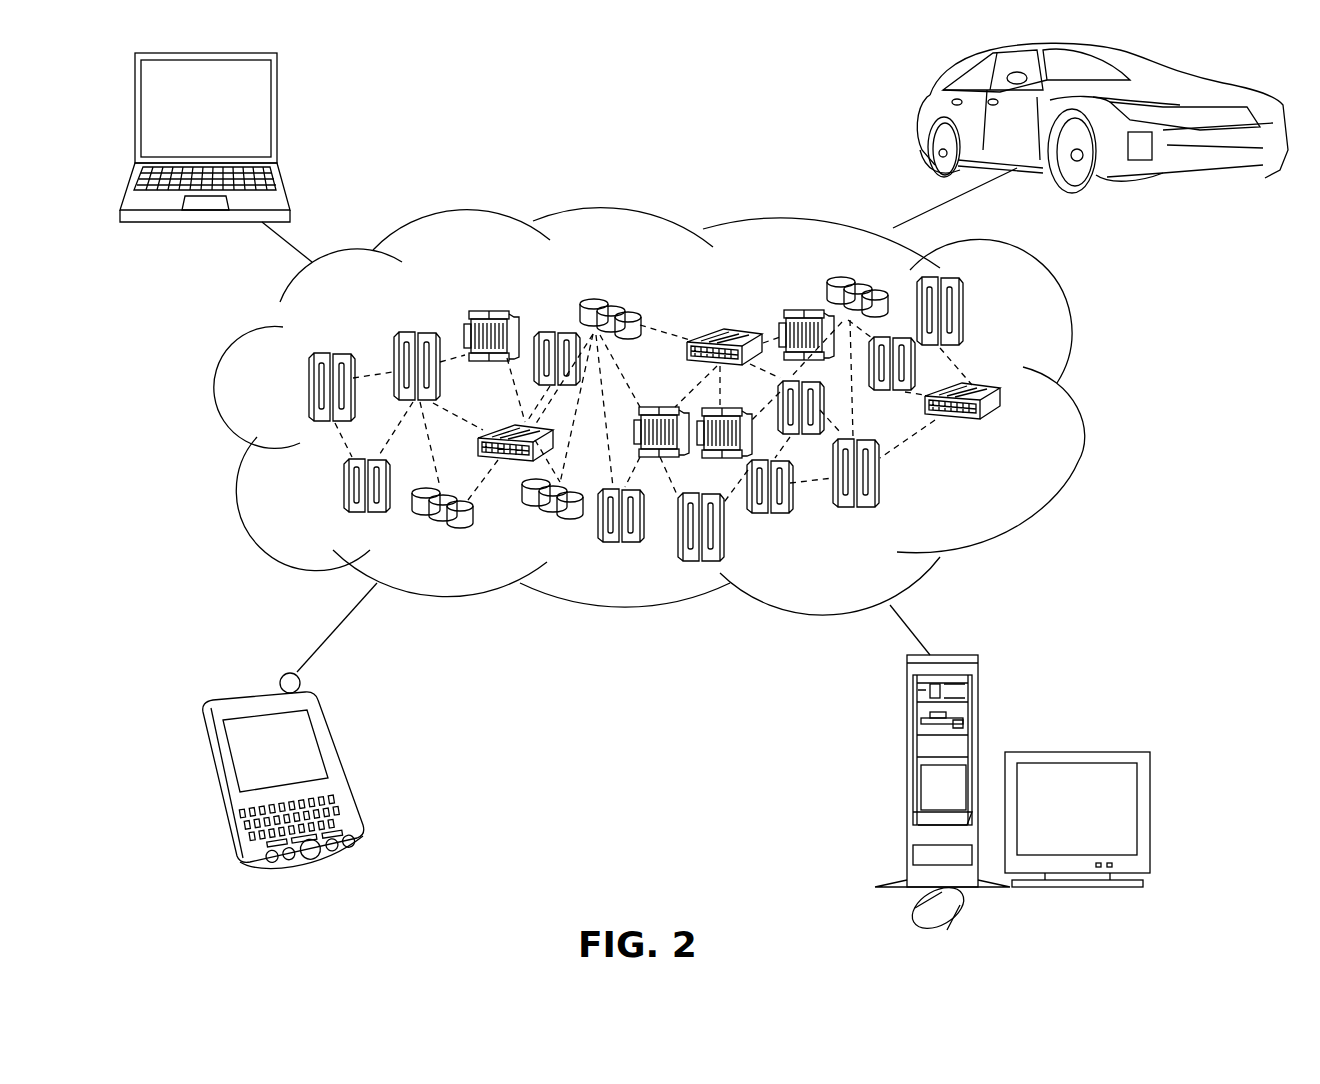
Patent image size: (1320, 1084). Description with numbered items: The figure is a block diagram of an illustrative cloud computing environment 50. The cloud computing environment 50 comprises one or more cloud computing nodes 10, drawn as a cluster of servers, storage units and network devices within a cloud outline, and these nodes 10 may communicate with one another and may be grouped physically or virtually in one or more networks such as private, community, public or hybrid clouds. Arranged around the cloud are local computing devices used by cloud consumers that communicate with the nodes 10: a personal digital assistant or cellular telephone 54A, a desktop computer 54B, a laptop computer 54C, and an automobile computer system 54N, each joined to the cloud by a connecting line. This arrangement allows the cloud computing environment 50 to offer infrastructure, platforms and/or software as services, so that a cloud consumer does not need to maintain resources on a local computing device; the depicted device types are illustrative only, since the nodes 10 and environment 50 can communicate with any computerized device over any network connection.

The cloud computing nodes 10 is at (983, 504).
The cloud computing environment 50 is at (1078, 398).
The personal digital assistant (PDA) or cellular telephone 54A is at (330, 730).
The desktop computer 54B is at (906, 716).
The laptop computer 54C is at (277, 92).
The automobile computer system 54N is at (920, 108).